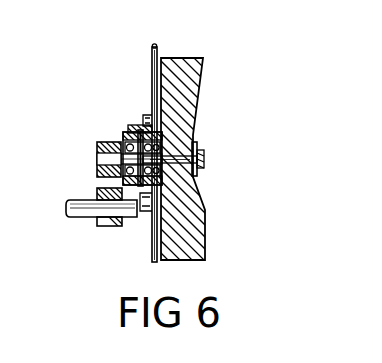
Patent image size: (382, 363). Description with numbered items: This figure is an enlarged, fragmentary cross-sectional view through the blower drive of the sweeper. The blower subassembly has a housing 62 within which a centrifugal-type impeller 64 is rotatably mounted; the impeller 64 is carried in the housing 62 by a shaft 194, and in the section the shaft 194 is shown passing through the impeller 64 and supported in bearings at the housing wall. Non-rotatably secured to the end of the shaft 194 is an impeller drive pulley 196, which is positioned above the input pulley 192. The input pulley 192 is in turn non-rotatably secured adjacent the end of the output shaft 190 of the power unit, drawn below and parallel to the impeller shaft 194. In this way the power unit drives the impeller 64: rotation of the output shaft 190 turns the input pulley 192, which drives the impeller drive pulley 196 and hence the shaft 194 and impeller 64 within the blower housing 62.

The blower housing 62 is at (152, 73).
The impeller 64 is at (196, 82).
The output shaft 190 is at (84, 210).
The input pulley 192 is at (116, 226).
The shaft 194 is at (196, 180).
The impeller drive pulley 196 is at (100, 150).